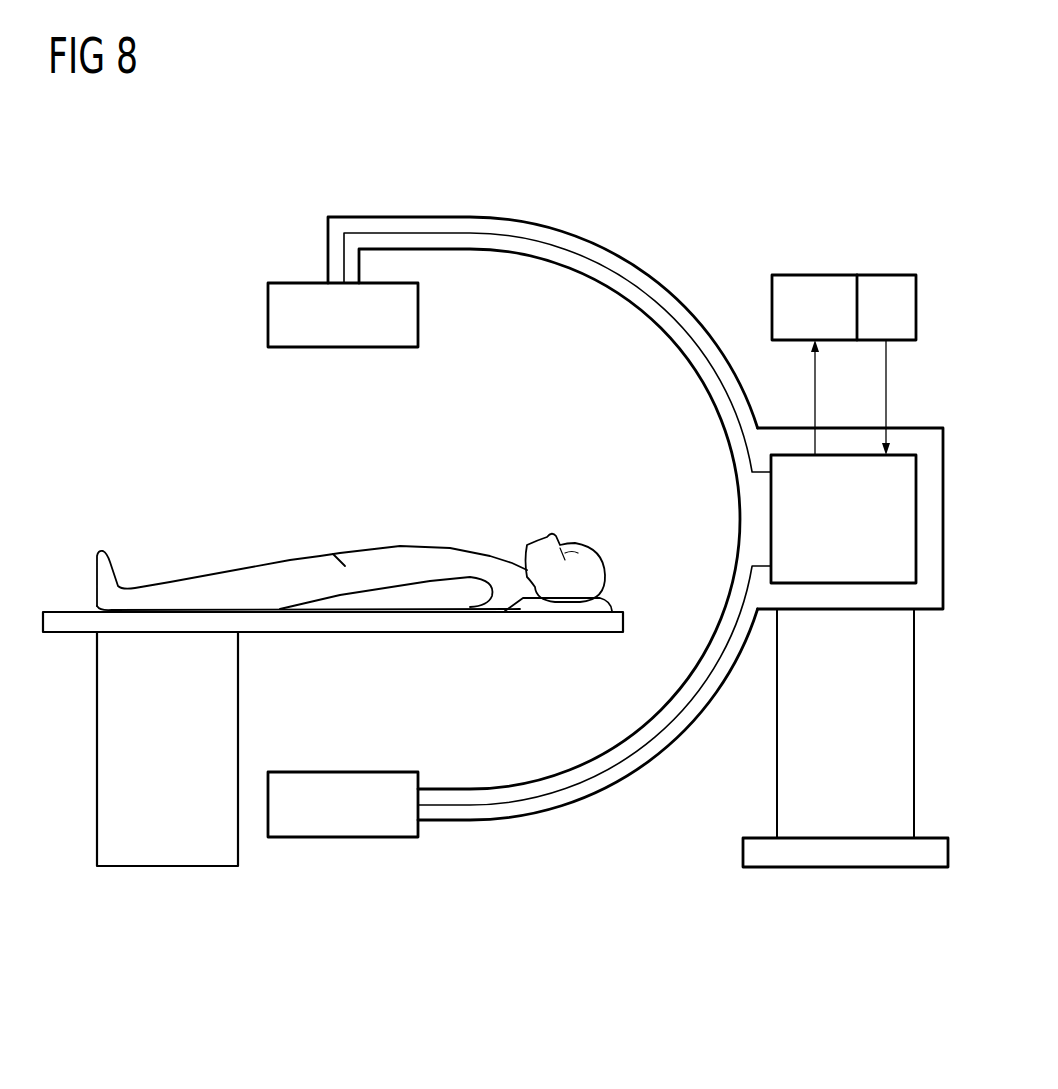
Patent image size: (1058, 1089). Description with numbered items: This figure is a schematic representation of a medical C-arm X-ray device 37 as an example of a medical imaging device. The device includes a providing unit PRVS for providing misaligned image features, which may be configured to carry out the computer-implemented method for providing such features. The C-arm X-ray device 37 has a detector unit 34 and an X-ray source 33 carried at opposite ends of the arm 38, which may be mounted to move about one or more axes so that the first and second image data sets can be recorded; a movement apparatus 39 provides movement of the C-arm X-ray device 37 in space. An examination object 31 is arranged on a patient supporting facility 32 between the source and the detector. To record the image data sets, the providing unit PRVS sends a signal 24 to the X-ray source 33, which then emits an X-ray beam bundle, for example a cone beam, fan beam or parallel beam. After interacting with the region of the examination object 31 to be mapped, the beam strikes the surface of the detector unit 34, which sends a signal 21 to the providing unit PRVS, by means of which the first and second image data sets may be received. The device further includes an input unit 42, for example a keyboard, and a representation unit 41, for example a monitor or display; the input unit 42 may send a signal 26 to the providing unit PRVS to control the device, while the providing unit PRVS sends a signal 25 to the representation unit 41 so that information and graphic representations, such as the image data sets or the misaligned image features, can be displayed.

The signal 21 is at (425, 234).
The signal 24 is at (515, 804).
The signal 25 is at (813, 369).
The signal 26 is at (888, 368).
The examination object 31 is at (403, 545).
The patient supporting facility 32 is at (161, 877).
The X-ray source 33 is at (345, 839).
The detector unit 34 is at (290, 281).
The medical C-arm X-ray device 37 is at (577, 168).
The arm 38 is at (378, 216).
The movement apparatus 39 is at (845, 869).
The representation unit 41 is at (809, 274).
The input unit 42 is at (884, 274).
The providing unit PRVS is at (855, 585).